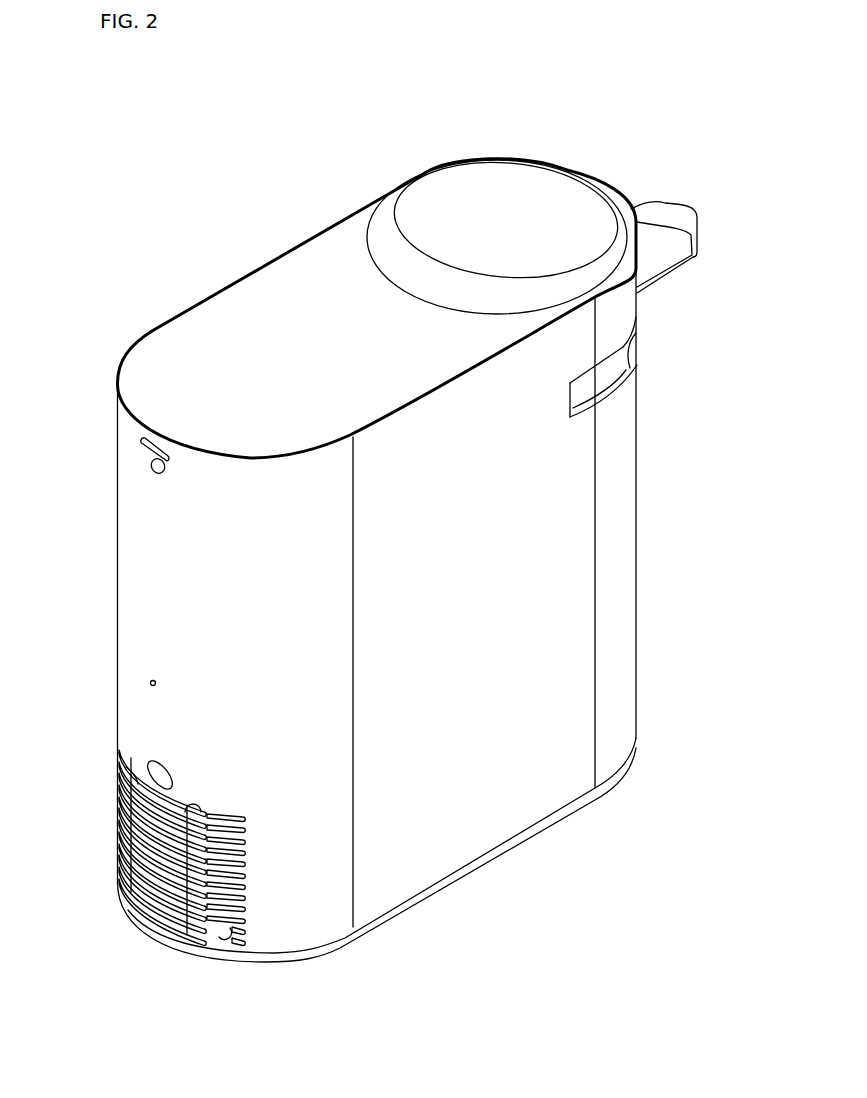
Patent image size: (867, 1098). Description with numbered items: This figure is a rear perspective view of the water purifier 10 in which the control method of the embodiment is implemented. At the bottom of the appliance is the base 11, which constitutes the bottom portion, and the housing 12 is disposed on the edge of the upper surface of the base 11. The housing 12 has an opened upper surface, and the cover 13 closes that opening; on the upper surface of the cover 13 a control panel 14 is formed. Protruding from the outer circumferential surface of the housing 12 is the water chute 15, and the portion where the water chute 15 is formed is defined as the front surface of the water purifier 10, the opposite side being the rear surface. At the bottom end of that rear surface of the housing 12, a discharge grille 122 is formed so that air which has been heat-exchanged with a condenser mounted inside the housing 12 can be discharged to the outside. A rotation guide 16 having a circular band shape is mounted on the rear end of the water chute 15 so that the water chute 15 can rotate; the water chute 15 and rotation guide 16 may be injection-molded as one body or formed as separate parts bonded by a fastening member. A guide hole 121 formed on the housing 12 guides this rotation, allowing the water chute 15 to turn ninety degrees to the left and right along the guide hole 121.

The water purifier 10 is at (346, 139).
The base 11 is at (462, 873).
The housing 12 is at (583, 578).
The guide hole 121 is at (637, 371).
The discharge grille 122 is at (222, 887).
The cover 13 is at (263, 303).
The control panel 14 is at (497, 187).
The water chute 15 is at (658, 215).
The rotation guide 16 is at (627, 348).